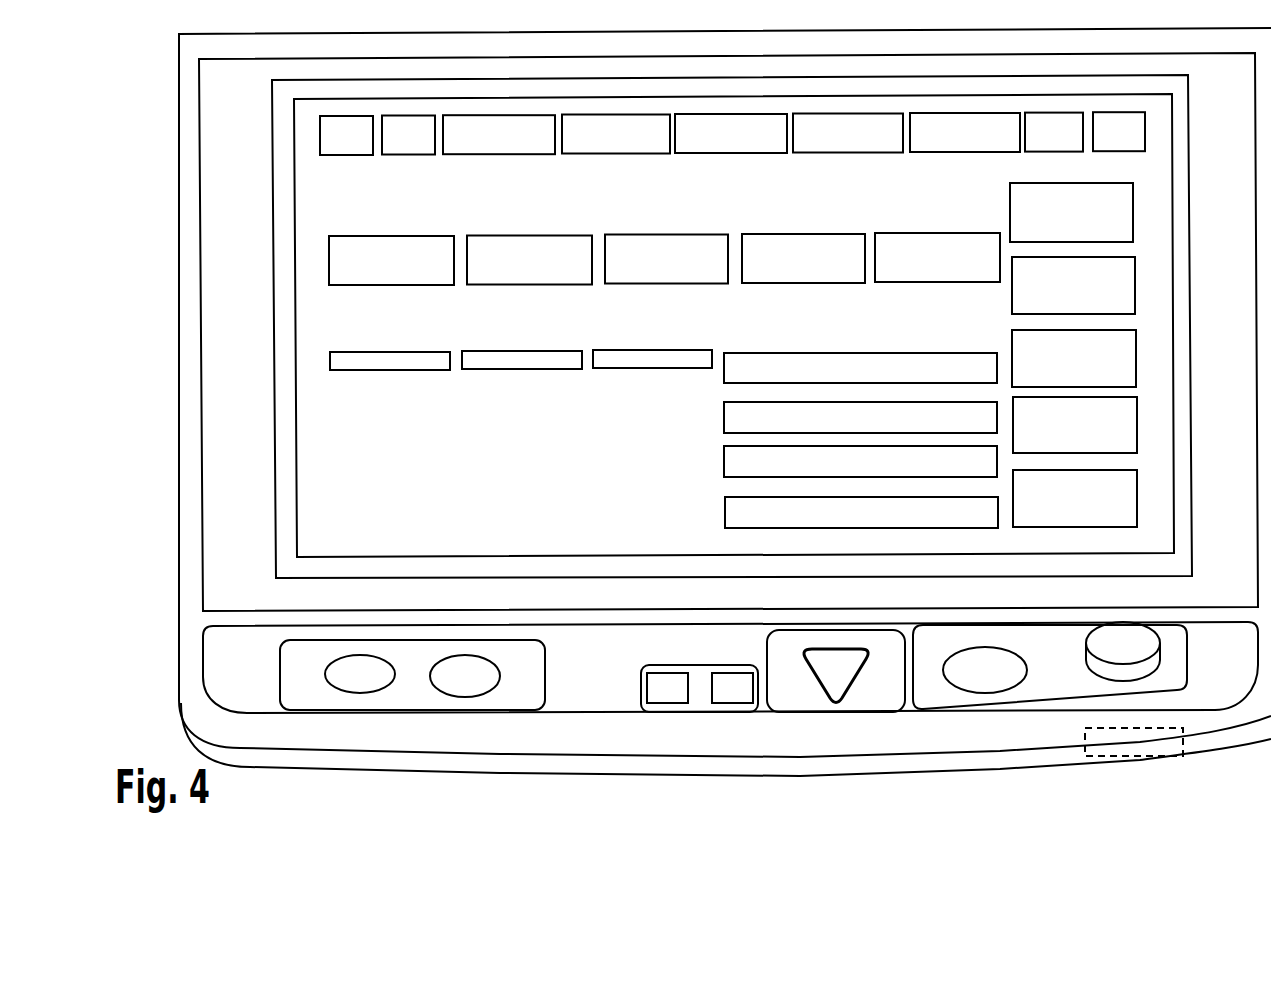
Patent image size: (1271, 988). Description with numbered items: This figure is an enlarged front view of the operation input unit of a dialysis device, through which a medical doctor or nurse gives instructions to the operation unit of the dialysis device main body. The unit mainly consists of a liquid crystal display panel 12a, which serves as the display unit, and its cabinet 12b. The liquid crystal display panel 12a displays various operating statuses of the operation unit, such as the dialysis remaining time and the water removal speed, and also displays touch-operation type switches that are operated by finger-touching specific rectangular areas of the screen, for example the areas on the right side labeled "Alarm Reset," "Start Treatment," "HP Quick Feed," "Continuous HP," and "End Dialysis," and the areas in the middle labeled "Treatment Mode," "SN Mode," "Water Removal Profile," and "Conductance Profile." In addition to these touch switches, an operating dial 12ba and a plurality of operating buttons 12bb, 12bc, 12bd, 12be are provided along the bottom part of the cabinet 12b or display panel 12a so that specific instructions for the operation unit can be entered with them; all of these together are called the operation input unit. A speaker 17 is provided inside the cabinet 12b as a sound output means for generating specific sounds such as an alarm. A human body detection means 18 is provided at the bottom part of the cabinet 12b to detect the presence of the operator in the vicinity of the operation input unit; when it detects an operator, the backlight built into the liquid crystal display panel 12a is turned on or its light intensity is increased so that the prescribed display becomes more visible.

The liquid crystal display panel 12a is at (276, 492).
The cabinet 12b is at (179, 566).
The operating dial 12ba is at (1093, 681).
The operating button 12bb is at (953, 688).
The operating button 12bc is at (857, 685).
The operating button 12bd is at (498, 684).
The operating button 12be is at (358, 693).
The speaker 17 is at (1150, 757).
The human body detection means 18 is at (710, 713).